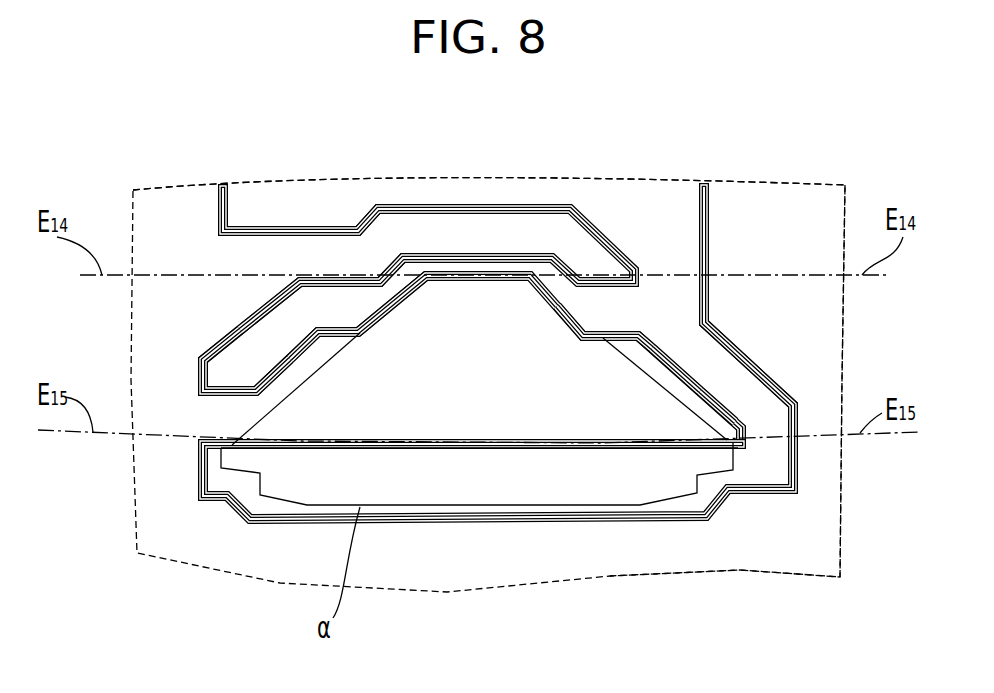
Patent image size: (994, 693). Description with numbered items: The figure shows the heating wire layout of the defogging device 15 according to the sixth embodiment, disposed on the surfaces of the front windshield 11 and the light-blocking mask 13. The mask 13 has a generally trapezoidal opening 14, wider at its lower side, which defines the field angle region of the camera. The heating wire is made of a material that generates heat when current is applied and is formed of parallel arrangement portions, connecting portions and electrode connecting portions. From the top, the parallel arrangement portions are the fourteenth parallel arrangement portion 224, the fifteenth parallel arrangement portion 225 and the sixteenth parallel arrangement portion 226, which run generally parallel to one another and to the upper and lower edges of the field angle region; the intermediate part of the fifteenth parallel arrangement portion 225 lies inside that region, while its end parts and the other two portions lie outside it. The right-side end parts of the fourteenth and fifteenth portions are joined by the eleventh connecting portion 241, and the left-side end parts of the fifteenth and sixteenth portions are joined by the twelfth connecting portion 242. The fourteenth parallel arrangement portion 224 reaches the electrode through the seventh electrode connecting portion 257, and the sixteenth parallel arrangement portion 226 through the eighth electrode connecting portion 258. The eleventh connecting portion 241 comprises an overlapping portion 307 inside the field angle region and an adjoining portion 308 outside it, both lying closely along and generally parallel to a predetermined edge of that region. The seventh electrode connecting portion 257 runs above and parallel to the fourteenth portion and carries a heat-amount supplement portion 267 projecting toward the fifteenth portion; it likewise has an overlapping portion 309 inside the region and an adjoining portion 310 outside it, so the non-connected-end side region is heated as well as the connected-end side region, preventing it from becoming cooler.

The front windshield 11 is at (827, 533).
The mask 13 is at (767, 552).
The opening 14 is at (449, 392).
The defogging device 15 is at (855, 151).
The 14th parallel arrangement portion 224 is at (489, 270).
The 15th parallel arrangement portion 225 is at (498, 455).
The 16th parallel arrangement portion 226 is at (603, 508).
The 11th connecting portion 241 is at (660, 350).
The 12th connecting portion 242 is at (198, 463).
The seventh electrode connecting portion 257 is at (215, 205).
The eighth electrode connecting portion 258 is at (707, 223).
The heat-amount supplement portion 267 is at (255, 317).
The overlapping portion 307 is at (573, 307).
The adjoining portion 308 is at (708, 401).
The overlapping portion 309 is at (390, 300).
The adjoining portion 310 is at (263, 378).